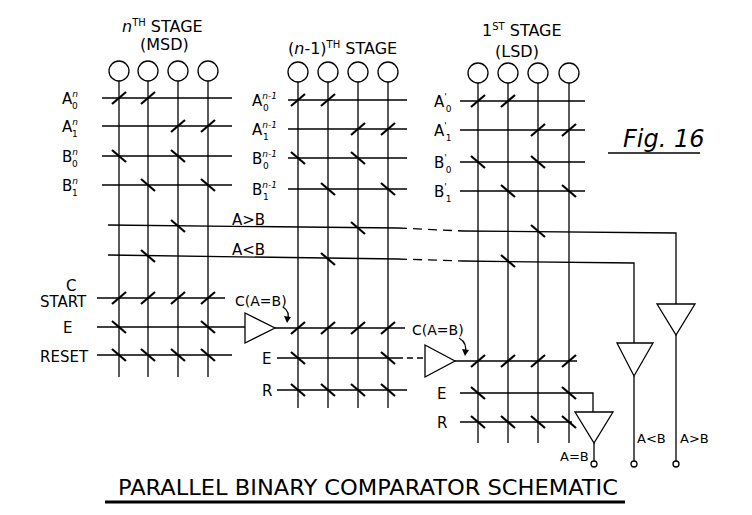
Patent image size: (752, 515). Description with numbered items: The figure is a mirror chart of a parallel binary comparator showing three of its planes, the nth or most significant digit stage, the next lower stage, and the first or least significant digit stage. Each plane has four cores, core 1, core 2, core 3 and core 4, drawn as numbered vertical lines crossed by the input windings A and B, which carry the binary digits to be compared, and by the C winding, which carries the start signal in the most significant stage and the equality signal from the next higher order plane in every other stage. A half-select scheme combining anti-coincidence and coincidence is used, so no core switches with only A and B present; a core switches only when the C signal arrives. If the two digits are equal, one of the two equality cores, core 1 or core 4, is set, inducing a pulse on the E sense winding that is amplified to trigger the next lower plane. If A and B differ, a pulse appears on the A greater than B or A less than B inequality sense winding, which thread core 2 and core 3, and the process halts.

The core 1 is at (298, 252).
The core 2 is at (328, 252).
The core 3 is at (358, 252).
The core 4 is at (388, 252).